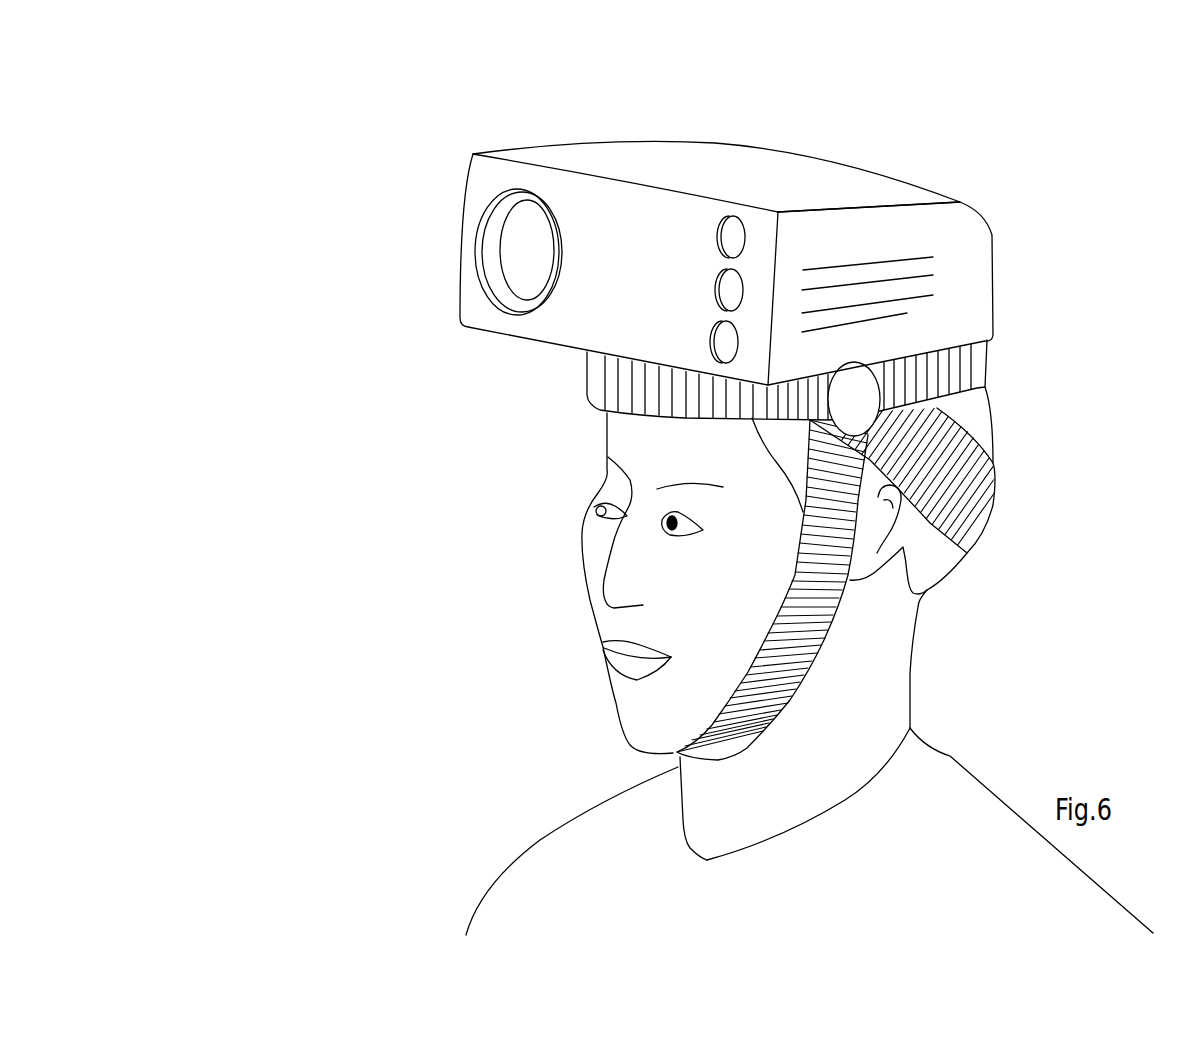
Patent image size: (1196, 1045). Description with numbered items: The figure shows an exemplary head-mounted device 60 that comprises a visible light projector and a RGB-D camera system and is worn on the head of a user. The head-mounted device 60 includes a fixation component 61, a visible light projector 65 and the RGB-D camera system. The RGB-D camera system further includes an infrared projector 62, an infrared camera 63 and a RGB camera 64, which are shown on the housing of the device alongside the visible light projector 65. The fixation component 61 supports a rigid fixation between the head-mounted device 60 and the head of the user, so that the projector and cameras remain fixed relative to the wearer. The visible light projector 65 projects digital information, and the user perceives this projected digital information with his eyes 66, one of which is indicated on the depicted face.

The head-mounted device 60 is at (726, 245).
The fixation component 61 is at (893, 428).
The infrared projector 62 is at (733, 230).
The infrared camera 63 is at (731, 290).
The RGB camera 64 is at (722, 342).
The visible light projector 65 is at (510, 250).
The eyes 66 is at (610, 511).